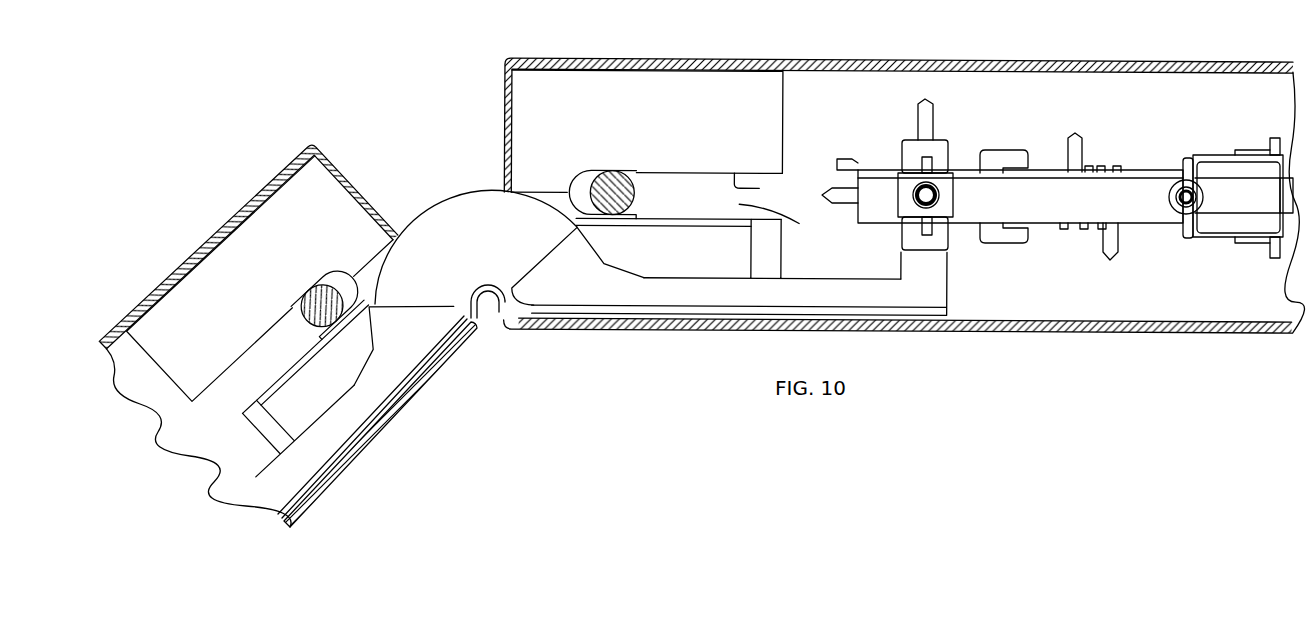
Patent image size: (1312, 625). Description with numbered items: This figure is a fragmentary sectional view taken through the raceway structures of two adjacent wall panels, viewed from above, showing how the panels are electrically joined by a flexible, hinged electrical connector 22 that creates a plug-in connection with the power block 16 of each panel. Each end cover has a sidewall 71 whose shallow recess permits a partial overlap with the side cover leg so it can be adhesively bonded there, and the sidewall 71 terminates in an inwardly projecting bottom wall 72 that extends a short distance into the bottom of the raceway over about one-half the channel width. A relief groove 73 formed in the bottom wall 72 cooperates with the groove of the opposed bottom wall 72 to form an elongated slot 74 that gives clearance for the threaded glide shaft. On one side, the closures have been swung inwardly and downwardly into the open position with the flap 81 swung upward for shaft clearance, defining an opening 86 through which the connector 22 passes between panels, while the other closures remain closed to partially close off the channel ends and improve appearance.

The power block 16 is at (1145, 165).
The flexible electrical connector 22 is at (436, 196).
The sidewall 71 is at (647, 121).
The bottom wall 72 is at (772, 243).
The relief groove 73 is at (764, 187).
The elongated slot 74 is at (783, 225).
The flap 81 is at (739, 291).
The opening 86 is at (498, 302).